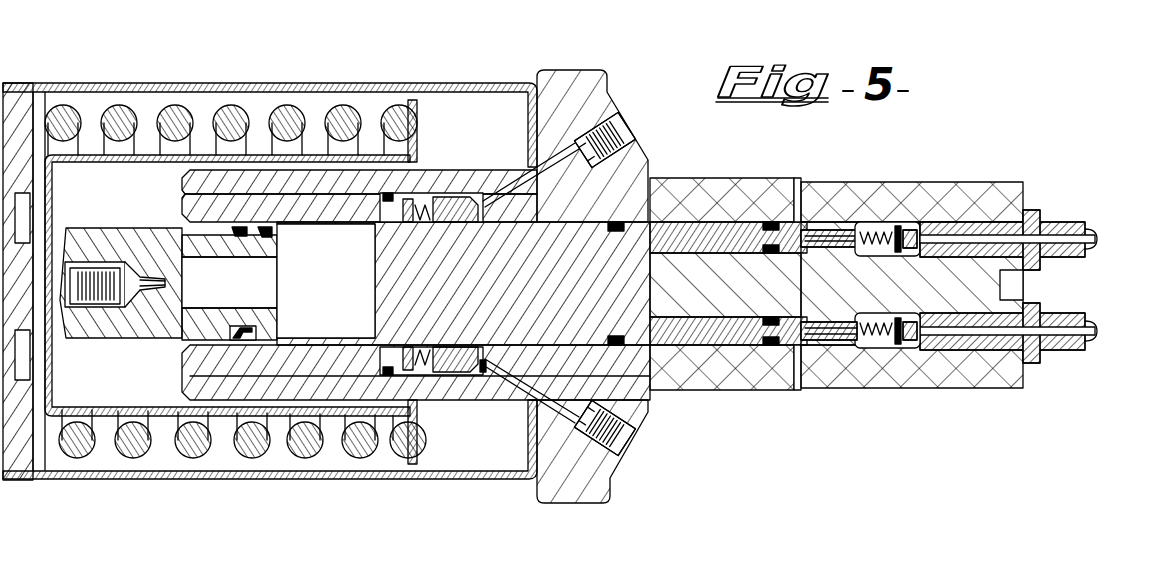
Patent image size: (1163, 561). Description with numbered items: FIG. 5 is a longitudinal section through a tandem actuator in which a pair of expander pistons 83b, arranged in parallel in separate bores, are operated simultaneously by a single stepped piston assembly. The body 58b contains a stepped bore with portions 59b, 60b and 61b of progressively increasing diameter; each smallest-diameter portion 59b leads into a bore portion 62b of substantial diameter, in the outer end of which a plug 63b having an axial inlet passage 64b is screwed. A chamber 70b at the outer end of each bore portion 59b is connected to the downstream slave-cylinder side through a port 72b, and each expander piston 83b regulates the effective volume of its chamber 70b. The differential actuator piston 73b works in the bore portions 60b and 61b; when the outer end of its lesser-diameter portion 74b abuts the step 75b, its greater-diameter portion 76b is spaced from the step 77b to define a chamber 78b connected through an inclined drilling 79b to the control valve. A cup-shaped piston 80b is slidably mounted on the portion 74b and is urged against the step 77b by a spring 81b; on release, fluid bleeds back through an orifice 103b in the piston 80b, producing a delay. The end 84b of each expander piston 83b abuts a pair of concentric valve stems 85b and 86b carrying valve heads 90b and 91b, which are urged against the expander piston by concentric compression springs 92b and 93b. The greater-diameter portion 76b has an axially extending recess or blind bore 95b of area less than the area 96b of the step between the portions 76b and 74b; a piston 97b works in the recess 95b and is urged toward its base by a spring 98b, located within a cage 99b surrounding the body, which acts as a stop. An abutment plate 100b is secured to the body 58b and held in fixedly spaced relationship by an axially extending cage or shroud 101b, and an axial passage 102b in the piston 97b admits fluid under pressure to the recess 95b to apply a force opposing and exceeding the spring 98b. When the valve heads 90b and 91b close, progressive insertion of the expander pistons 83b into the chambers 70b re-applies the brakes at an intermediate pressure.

The body 58b is at (653, 180).
The smallest diameter bore portion 59b is at (800, 196).
The bore portion 60b is at (642, 176).
The bore portion 61b is at (263, 193).
The bore portion of substantial diameter 62b is at (990, 296).
The plug 63b is at (1068, 222).
The axial inlet passage 64b is at (1096, 238).
The chamber 70b is at (850, 222).
The port 72b is at (797, 180).
The differential actuator piston 73b is at (455, 247).
The piston portion of lesser diameter 74b is at (517, 250).
The step 75b is at (652, 290).
The piston portion of greater diameter 76b is at (377, 350).
The step 77b is at (600, 456).
The chamber 78b is at (430, 372).
The inclined drilling 79b is at (613, 430).
The cup-shaped piston 80b is at (540, 413).
The spring 81b is at (418, 370).
The expander piston 83b is at (704, 243).
The end of expander piston 84b is at (847, 248).
The inner valve stem 85b is at (900, 250).
The outer valve stem 86b is at (885, 226).
The valve head 90b is at (918, 228).
The valve head 91b is at (900, 233).
The compression spring 92b is at (908, 236).
The compression spring 93b is at (945, 258).
The recess or blind bore 95b is at (335, 257).
The area of step 96b is at (418, 193).
The piston 97b is at (125, 267).
The spring 98b is at (303, 127).
The cage 99b is at (220, 417).
The abutment plate 100b is at (17, 423).
The cage or shroud 101b is at (173, 473).
The axial passage 102b is at (132, 300).
The orifice 103b is at (490, 372).